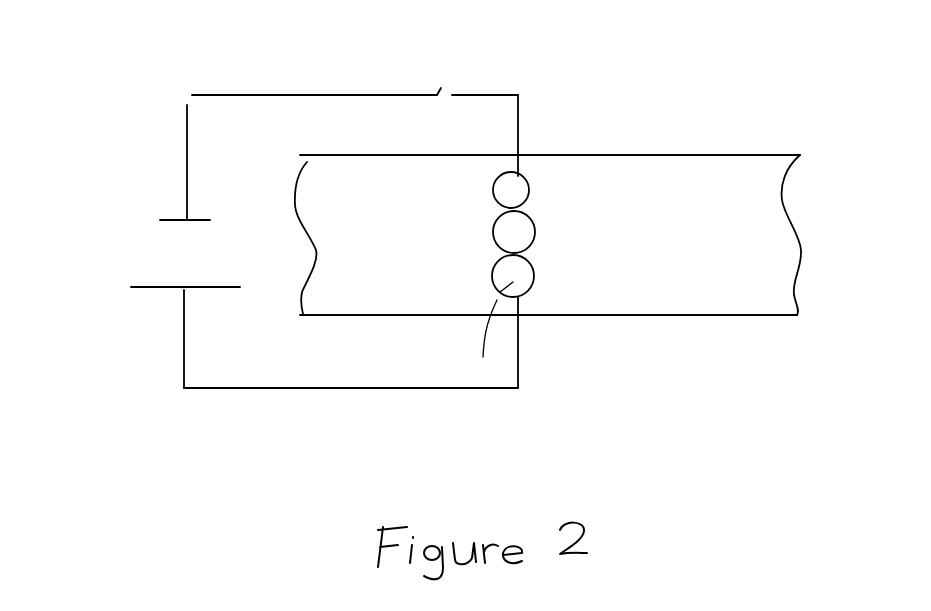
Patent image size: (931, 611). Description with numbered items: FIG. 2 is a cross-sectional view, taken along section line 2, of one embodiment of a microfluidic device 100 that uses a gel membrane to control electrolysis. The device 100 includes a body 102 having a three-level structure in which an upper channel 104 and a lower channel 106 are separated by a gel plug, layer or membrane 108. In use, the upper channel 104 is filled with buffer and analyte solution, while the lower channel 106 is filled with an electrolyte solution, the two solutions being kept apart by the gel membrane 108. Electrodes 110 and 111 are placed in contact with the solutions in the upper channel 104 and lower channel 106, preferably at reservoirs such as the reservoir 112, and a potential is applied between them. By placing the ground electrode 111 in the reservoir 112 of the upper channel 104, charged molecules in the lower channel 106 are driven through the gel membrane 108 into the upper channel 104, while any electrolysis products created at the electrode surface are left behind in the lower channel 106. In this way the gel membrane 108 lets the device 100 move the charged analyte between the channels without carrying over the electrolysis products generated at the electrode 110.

The microfluidic device 100 is at (742, 32).
The body 102 is at (830, 119).
The upper channel 104 is at (430, 135).
The lower channel 106 is at (604, 387).
The gel membrane 108 is at (724, 362).
The electrode 110 is at (405, 347).
The ground electrode 111 is at (548, 123).
The reservoir 112 is at (137, 240).
The section line 2 is at (535, 176).